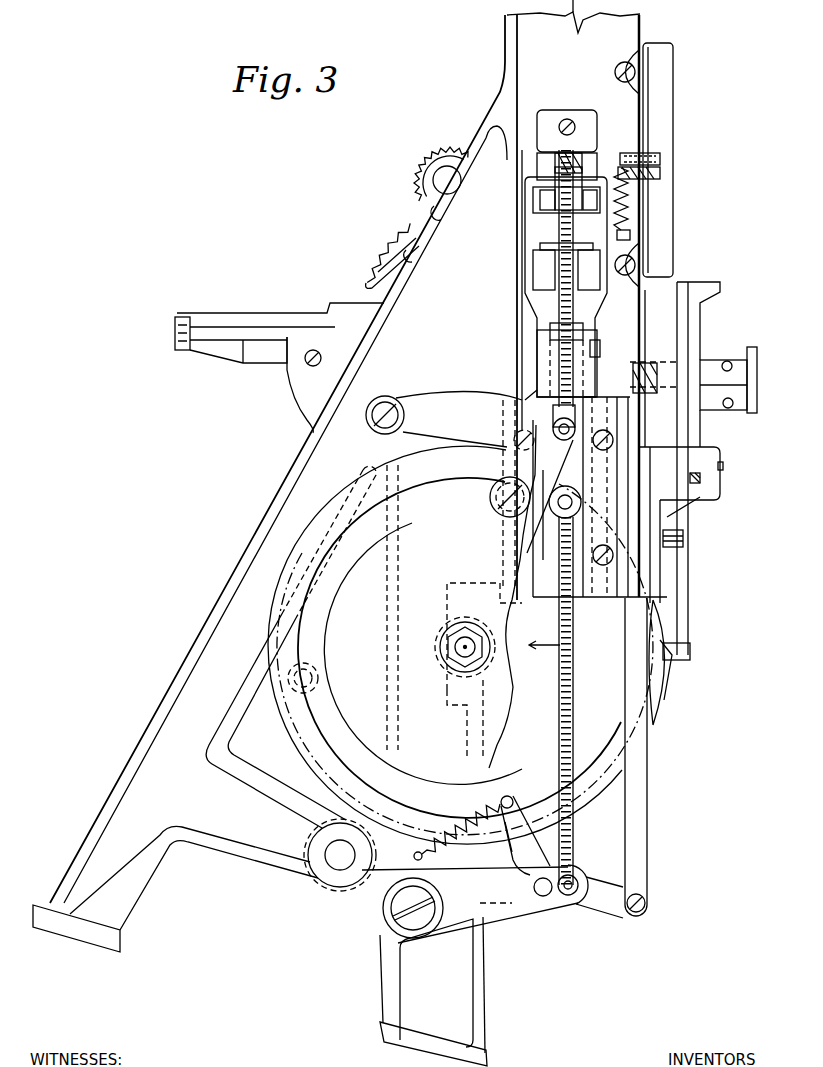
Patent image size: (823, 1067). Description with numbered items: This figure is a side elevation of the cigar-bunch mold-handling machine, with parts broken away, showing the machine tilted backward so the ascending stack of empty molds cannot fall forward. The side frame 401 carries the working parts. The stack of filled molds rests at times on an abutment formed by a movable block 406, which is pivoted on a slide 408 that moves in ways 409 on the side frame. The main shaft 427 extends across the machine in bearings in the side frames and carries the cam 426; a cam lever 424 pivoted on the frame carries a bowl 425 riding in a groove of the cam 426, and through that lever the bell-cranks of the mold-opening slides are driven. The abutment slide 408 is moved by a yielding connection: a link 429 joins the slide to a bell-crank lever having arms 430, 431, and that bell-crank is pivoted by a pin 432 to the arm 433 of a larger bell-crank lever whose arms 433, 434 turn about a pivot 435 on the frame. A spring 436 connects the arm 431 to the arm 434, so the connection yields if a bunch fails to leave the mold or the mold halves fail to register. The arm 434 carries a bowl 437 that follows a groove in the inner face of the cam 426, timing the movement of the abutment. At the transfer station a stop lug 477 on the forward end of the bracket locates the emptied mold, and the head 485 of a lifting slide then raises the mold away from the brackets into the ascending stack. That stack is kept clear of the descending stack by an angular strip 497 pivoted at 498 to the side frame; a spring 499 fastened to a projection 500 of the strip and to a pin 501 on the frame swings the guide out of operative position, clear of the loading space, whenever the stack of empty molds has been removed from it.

The side frame 401 is at (350, 533).
The movable block 406 is at (566, 258).
The slide 408 is at (548, 387).
The ways 409 is at (530, 580).
The cam lever 424 is at (444, 420).
The bowl 425 is at (497, 510).
The cam 426 is at (460, 645).
The main shaft 427 is at (463, 645).
The link 429 is at (567, 673).
The bell-crank lever arm 430 is at (573, 873).
The bell-crank lever arm 431 is at (517, 828).
The pin 432 is at (543, 896).
The bell-crank lever arm 433 is at (430, 893).
The bell-crank lever arm 434 is at (320, 818).
The pivot 435 is at (390, 913).
The spring 436 is at (486, 798).
The bowl 437 is at (318, 676).
The stop lug 477 is at (757, 372).
The head 485 is at (688, 387).
The angular strip 497 is at (665, 122).
The pivot 498 is at (660, 160).
The spring 499 is at (623, 205).
The projection 500 is at (645, 175).
The pin 501 is at (632, 238).